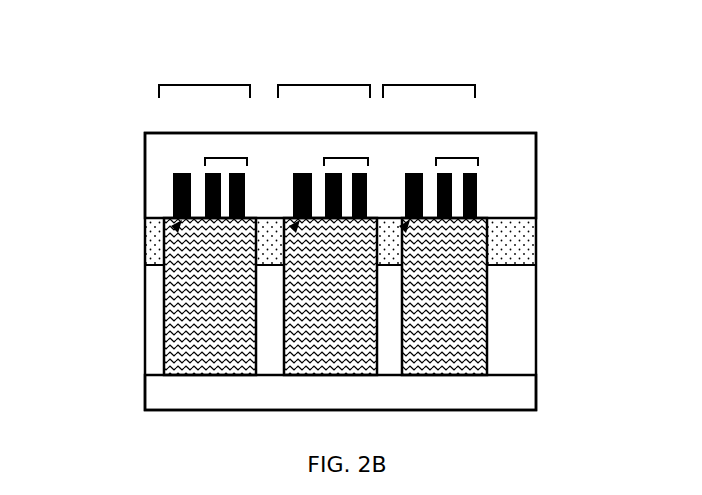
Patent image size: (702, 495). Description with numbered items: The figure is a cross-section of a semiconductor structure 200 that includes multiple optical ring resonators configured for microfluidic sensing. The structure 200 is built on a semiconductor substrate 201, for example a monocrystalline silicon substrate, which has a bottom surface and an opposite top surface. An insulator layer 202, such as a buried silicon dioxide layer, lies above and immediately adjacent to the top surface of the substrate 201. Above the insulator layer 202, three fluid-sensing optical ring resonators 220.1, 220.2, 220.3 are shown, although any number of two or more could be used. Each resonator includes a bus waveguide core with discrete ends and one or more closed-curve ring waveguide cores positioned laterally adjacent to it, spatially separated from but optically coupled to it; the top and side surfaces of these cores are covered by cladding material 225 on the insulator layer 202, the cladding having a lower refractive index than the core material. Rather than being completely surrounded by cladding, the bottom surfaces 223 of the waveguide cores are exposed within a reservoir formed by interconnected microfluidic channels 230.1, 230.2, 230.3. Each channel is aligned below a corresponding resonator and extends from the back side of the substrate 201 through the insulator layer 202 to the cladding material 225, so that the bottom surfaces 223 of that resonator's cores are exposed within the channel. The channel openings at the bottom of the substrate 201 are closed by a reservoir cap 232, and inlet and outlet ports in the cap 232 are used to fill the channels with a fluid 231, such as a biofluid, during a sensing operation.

The semiconductor structure 200 is at (530, 36).
The semiconductor substrate 201 is at (536, 353).
The insulator layer 202 is at (536, 240).
The fluid-sensing optical ring resonator 220.1 is at (429, 85).
The fluid-sensing optical ring resonator 220.2 is at (324, 85).
The fluid-sensing optical ring resonator 220.3 is at (204, 85).
The bottom surface 223 is at (407, 226).
The cladding material 225 is at (536, 175).
The channel 230.1 is at (488, 301).
The channel 230.2 is at (254, 347).
The channel 230.3 is at (163, 300).
The fluid 231 is at (238, 305).
The reservoir cap 232 is at (536, 400).